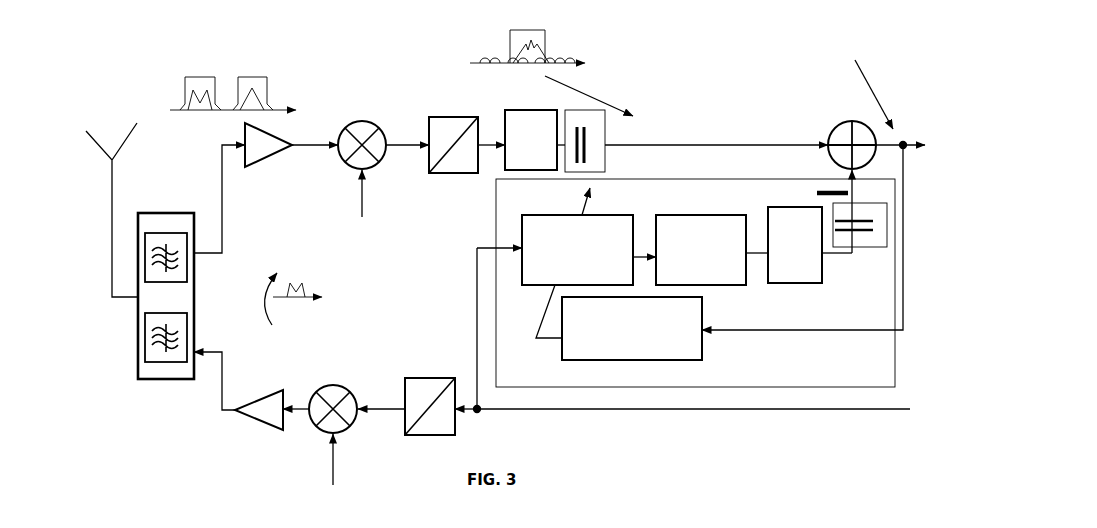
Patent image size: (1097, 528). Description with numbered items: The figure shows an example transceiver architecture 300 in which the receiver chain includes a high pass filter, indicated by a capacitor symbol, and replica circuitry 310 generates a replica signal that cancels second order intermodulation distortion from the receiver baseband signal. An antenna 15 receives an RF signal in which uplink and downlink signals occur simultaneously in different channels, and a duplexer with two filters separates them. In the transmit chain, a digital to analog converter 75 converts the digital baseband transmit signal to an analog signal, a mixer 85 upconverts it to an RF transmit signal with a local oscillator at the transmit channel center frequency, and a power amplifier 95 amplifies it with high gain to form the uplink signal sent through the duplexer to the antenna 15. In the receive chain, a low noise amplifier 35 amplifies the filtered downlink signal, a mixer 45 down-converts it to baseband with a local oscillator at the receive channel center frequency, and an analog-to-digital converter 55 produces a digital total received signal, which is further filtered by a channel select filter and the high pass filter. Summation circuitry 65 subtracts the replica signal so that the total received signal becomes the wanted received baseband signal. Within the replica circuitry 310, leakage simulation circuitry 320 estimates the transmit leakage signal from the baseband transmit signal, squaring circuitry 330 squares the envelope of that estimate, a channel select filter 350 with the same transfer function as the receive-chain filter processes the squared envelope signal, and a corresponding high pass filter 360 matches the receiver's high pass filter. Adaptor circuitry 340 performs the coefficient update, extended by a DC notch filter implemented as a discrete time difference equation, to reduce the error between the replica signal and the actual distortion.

The transceiver architecture 300 is at (322, 67).
The antenna 15 is at (108, 195).
The low noise amplifier 35 is at (268, 167).
The mixer 45 is at (367, 114).
The analog-to-digital converter 55 is at (460, 115).
The summation circuitry 65 is at (830, 128).
The digital to analog converter 75 is at (445, 378).
The mixer 85 is at (353, 378).
The power amplifier 95 is at (252, 423).
The replica circuitry 310 is at (686, 283).
The leakage simulation circuitry 320 is at (555, 236).
The squaring circuitry 330 is at (689, 250).
The adaptor circuitry 340 is at (619, 322).
The channel select filter 350 is at (799, 245).
The high pass filter 360 is at (860, 225).